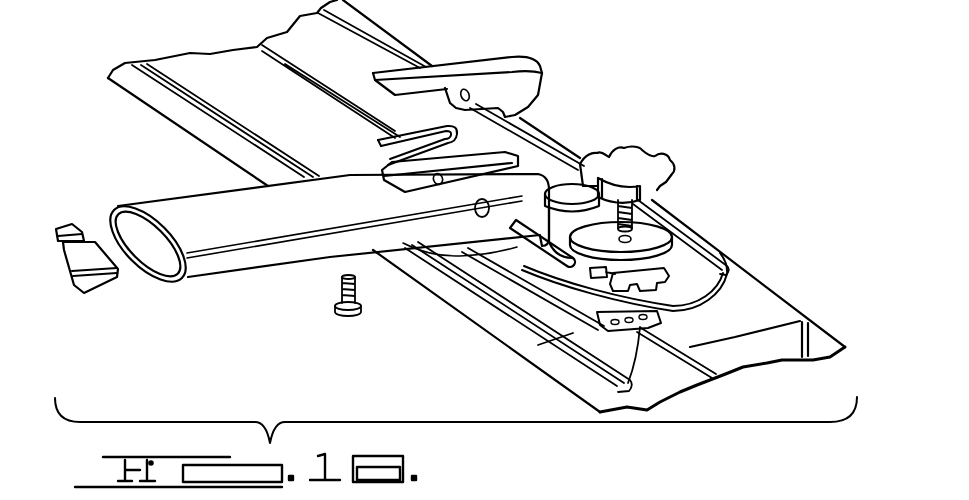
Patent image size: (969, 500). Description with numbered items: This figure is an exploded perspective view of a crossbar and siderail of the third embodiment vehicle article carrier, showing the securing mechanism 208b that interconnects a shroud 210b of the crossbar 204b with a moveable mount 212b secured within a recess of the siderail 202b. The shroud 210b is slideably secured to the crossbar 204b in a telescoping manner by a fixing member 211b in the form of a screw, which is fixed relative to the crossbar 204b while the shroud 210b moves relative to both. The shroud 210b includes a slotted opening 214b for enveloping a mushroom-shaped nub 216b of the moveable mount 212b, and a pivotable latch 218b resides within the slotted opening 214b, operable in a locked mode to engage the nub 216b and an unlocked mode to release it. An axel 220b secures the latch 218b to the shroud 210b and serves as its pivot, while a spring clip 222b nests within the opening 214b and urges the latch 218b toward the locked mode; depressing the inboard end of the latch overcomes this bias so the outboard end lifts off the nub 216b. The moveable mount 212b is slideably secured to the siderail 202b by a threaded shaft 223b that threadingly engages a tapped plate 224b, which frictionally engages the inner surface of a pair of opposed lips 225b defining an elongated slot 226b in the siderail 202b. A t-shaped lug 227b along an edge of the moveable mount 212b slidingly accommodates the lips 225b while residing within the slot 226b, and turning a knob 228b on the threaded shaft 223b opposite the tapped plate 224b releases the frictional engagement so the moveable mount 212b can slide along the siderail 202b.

The siderail 202b is at (777, 313).
The crossbar 204b is at (110, 283).
The securing mechanism 208b is at (684, 76).
The shroud 210b is at (212, 270).
The fixing member 211b is at (337, 317).
The moveable mount 212b is at (663, 240).
The slotted opening 214b is at (505, 185).
The mushroom-shaped nub 216b is at (568, 185).
The pivotable latch 218b is at (523, 67).
The axel 220b is at (545, 250).
The spring clip 222b is at (378, 141).
The threaded shaft 223b is at (655, 225).
The tapped plate 224b is at (665, 312).
The opposed lips 225b is at (555, 290).
The elongated slot 226b is at (550, 288).
The t-shaped lug 227b is at (665, 280).
The knob 228b is at (645, 153).